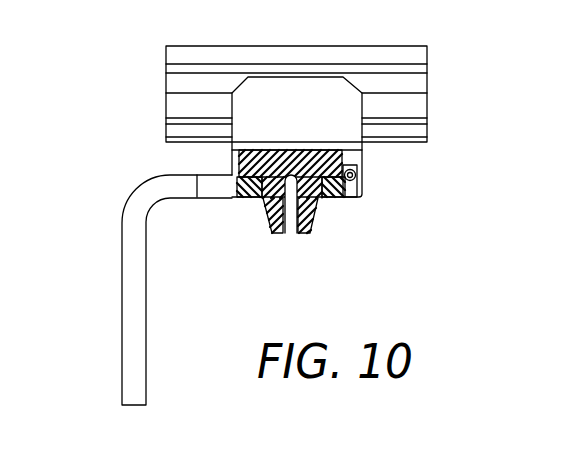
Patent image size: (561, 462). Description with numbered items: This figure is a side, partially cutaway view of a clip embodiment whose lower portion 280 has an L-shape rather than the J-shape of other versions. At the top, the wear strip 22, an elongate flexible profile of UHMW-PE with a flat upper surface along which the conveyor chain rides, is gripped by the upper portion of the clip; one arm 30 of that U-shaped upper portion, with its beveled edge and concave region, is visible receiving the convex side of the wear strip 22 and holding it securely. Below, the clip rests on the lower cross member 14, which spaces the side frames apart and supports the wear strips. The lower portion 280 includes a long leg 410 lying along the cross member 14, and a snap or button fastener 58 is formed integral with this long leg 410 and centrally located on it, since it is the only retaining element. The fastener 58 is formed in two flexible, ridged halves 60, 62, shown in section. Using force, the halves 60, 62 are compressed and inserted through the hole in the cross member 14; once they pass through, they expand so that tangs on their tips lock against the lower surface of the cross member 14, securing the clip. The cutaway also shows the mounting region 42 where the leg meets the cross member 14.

The wear strip 22 is at (192, 57).
The arm of the clip 30 is at (248, 108).
The long leg 410 is at (241, 158).
The mounting plate 42 is at (362, 192).
The lower cross member 14 is at (135, 295).
The snap or button fastener 58 is at (317, 233).
The fastener half 60 is at (267, 203).
The fastener half 62 is at (318, 205).
The lower portion of the clip 280 is at (367, 169).